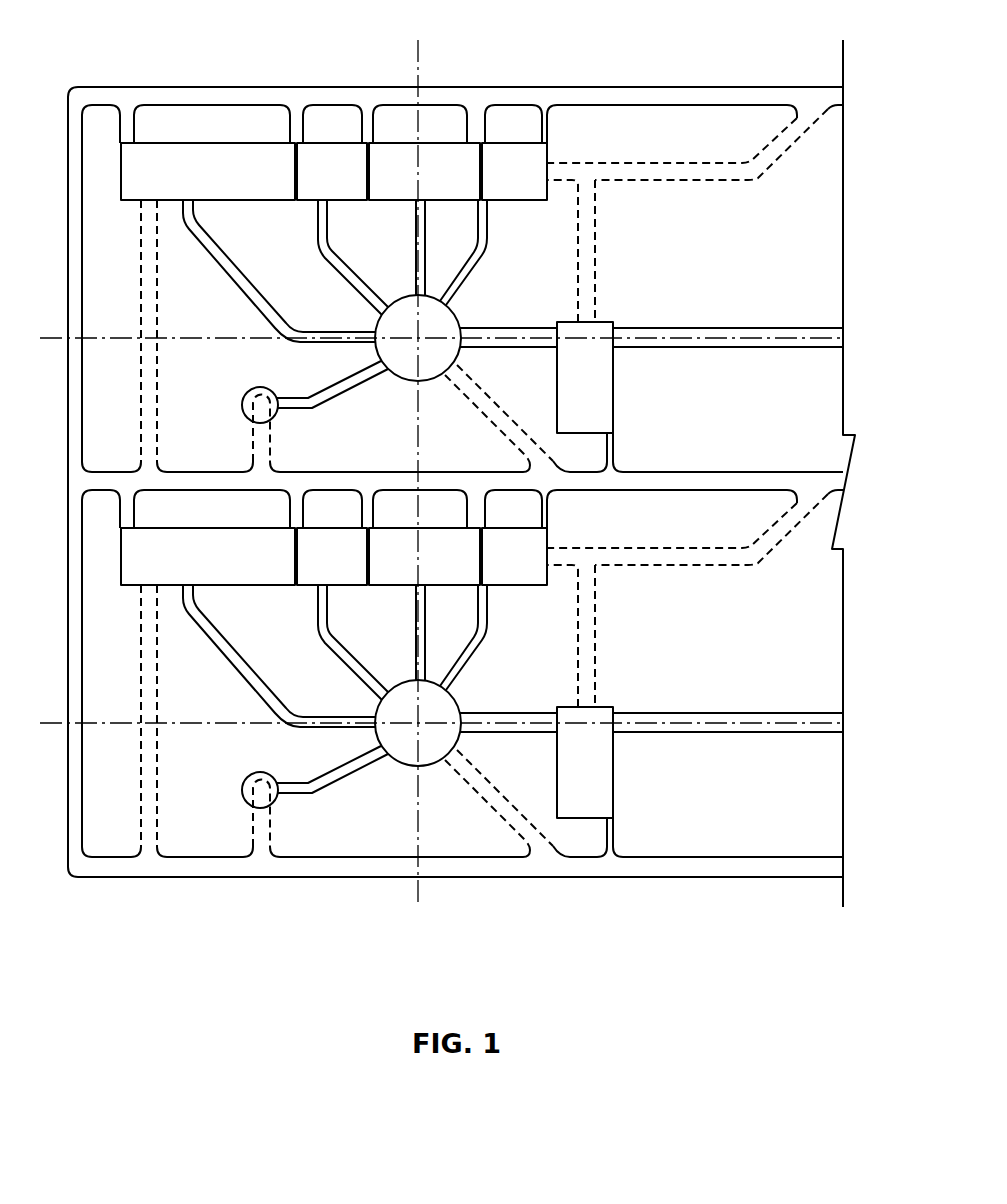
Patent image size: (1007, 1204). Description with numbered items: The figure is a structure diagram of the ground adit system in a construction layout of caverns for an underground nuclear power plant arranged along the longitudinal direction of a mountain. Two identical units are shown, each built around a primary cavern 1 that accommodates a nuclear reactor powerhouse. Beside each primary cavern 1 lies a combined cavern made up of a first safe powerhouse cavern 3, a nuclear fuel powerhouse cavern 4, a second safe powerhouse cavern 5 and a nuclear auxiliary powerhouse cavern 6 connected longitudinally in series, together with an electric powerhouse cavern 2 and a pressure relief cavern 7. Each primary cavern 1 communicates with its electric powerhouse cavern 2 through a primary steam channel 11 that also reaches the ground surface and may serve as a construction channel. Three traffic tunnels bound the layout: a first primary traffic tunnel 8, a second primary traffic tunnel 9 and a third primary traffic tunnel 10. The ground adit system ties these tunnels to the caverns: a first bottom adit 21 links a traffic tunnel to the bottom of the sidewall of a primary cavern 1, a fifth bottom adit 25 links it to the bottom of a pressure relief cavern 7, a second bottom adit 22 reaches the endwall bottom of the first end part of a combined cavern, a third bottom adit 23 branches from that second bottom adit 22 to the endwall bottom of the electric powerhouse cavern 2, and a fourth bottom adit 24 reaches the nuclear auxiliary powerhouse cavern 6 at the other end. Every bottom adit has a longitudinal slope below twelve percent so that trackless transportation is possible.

The primary cavern accommodating nuclear reactor powerhouse 1 is at (480, 680).
The electric powerhouse cavern 2 is at (642, 793).
The first safe powerhouse cavern 3 is at (540, 613).
The nuclear fuel powerhouse cavern 4 is at (463, 613).
The second safe powerhouse cavern 5 is at (372, 613).
The nuclear auxiliary powerhouse cavern 6 is at (255, 613).
The pressure relief cavern 7 is at (308, 753).
The first primary traffic tunnel 8 is at (745, 93).
The second primary traffic tunnel 9 is at (747, 480).
The third primary traffic tunnel 10 is at (745, 865).
The primary steam channel 11 is at (790, 765).
The first bottom adit 21 is at (538, 770).
The second bottom adit 22 is at (790, 593).
The third bottom adit 23 is at (630, 657).
The fourth bottom adit 24 is at (196, 772).
The fifth bottom adit 25 is at (310, 848).